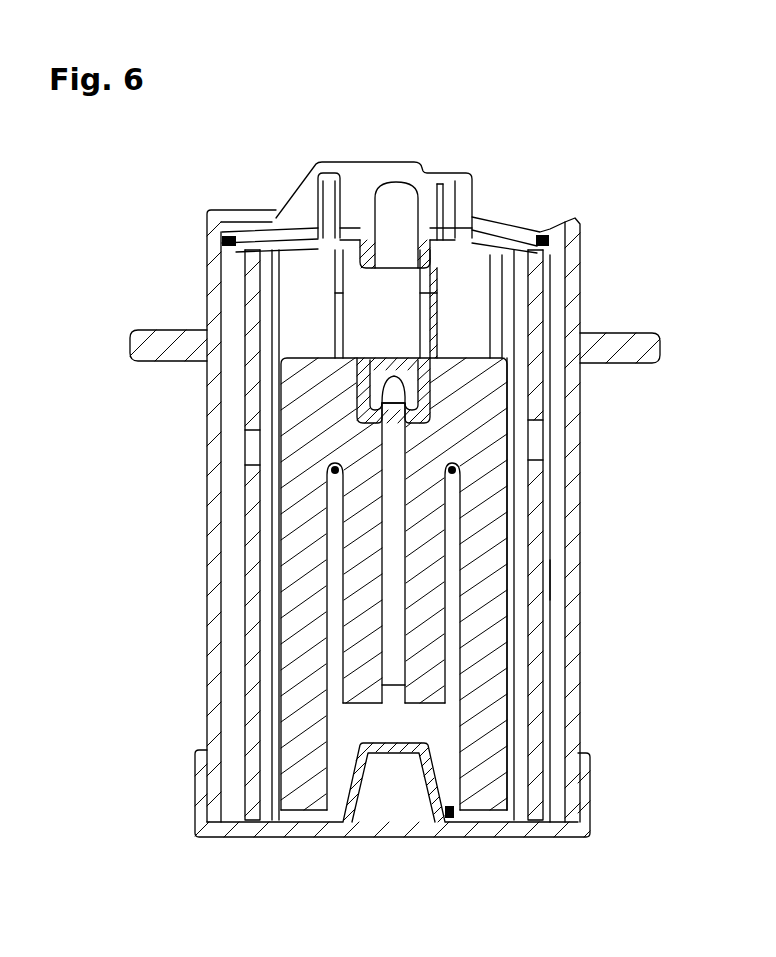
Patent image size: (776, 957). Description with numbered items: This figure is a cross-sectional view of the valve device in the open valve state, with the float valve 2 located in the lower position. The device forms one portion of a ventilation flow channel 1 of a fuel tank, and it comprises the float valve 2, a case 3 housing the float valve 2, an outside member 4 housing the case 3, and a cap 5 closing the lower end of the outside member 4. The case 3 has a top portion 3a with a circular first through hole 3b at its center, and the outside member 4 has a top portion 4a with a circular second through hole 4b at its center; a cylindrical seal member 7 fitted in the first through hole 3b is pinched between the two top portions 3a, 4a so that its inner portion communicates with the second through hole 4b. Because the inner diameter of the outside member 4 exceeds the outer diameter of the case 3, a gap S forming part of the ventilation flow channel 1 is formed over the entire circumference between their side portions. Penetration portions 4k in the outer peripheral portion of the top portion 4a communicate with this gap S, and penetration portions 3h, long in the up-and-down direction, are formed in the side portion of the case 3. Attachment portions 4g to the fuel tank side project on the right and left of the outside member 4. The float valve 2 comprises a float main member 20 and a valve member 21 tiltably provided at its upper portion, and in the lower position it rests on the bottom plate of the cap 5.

The ventilation flow channel 1 is at (386, 196).
The float valve 2 is at (479, 588).
The float main member 20 is at (394, 553).
The valve member 21 is at (376, 362).
The case 3 is at (250, 628).
The top portion 3a is at (482, 232).
The first through hole 3b is at (443, 256).
The penetration portions 3h is at (247, 424).
The outside member 4 is at (212, 540).
The top portion 4a is at (307, 228).
The second through hole 4b is at (404, 258).
The attachment portions 4g is at (148, 331).
The penetration portions 4k is at (232, 238).
The cap 5 is at (476, 840).
The seal member 7 is at (446, 248).
The gap S is at (556, 580).